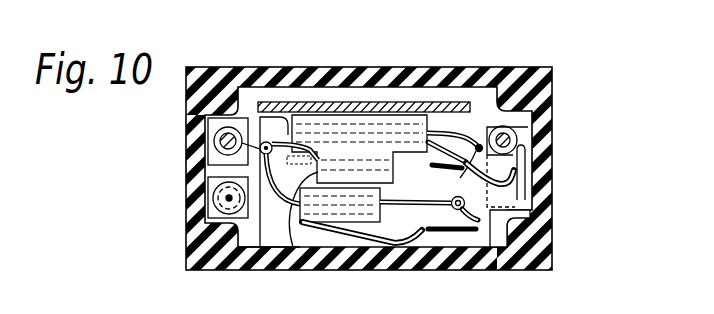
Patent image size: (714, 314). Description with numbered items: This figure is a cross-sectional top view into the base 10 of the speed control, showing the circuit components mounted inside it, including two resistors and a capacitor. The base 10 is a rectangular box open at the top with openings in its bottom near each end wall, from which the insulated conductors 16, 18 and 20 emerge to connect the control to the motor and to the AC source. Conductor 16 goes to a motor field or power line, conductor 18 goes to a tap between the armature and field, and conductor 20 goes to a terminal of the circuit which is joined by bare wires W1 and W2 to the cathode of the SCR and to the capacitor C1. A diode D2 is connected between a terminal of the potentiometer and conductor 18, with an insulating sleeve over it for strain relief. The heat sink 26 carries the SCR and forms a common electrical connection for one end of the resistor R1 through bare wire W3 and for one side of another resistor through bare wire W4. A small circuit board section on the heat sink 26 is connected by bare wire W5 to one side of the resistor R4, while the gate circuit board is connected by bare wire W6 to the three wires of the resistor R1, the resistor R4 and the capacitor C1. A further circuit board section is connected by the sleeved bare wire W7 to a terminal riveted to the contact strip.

The base 10 is at (206, 72).
The insulated conductor 16 is at (196, 141).
The insulated conductor 18 is at (213, 197).
The insulated conductor 20 is at (513, 134).
The heat sink 26 is at (250, 262).
The capacitor C1 is at (330, 116).
The diode D2 is at (216, 214).
The resistor R1 is at (268, 236).
The resistor R4 is at (336, 205).
The bare wire W1 is at (442, 140).
The bare wire W2 is at (478, 128).
The bare wire W3 is at (500, 196).
The bare wire W4 is at (458, 173).
The bare wire W5 is at (440, 249).
The bare wire W6 is at (262, 167).
The bare wire W7 is at (367, 250).